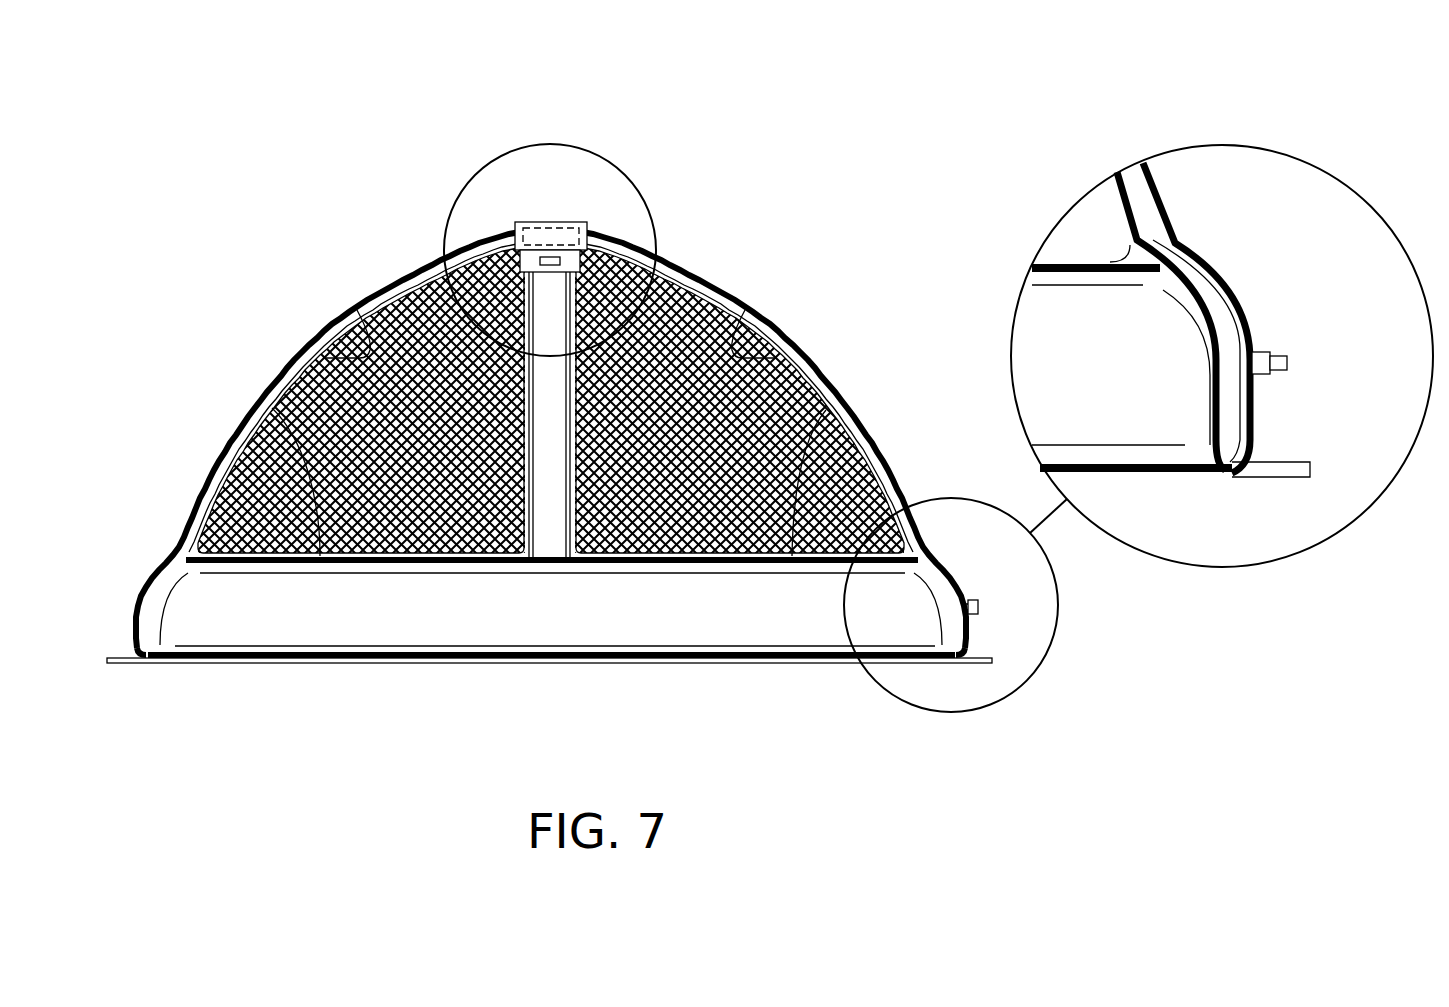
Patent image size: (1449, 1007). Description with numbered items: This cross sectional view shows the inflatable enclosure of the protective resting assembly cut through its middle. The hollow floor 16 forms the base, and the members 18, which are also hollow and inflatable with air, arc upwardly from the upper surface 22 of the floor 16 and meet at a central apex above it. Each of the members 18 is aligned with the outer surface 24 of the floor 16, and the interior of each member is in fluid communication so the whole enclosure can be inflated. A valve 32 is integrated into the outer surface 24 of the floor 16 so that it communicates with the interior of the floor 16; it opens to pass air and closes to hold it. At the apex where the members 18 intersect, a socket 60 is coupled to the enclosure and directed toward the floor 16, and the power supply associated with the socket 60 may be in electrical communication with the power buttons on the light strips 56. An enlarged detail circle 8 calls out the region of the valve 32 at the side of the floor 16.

The detail view circle 8 is at (635, 186).
The floor 16 is at (843, 404).
The members 18 is at (400, 270).
The upper surface 22 is at (270, 405).
The outer surface 24 is at (142, 590).
The valve 32 is at (980, 607).
The light strips 56 is at (348, 312).
The socket 60 is at (510, 232).